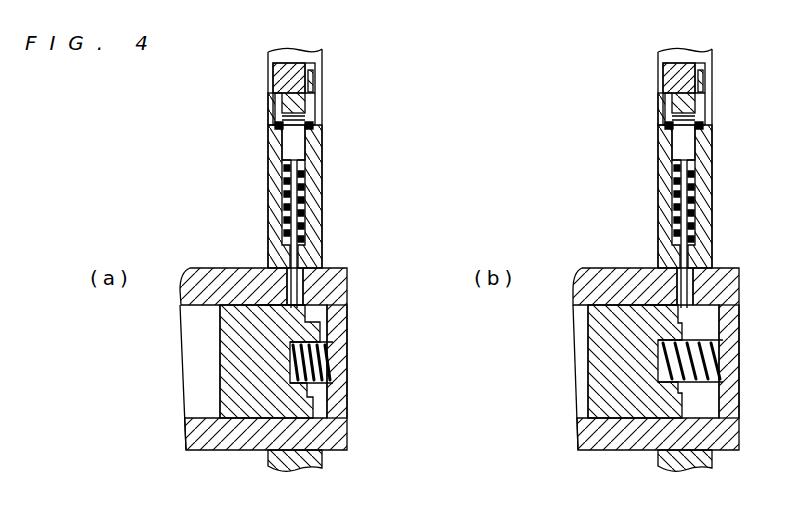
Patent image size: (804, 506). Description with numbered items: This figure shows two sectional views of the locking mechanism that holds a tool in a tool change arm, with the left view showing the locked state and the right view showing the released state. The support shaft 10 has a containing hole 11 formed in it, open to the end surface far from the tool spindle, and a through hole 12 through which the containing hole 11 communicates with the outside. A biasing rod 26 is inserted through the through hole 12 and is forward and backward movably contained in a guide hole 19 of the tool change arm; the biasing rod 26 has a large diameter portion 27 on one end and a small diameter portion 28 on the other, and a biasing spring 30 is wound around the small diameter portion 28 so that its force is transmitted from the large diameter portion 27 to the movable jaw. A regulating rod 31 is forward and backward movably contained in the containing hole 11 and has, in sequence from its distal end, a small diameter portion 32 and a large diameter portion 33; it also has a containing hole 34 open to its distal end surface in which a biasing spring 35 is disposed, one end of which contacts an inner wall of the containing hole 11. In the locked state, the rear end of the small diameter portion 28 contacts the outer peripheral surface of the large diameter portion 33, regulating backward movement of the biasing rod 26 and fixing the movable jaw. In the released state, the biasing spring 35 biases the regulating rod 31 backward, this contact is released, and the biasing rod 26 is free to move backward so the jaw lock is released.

The support shaft 10 is at (264, 450).
The containing hole 11 is at (226, 320).
The through hole 12 is at (300, 262).
The guide hole 19 is at (300, 217).
The biasing rod 26 is at (529, 121).
The large diameter portion 27 is at (300, 142).
The small diameter portion 28 is at (294, 186).
The biasing spring 30 is at (284, 199).
The regulating rod 31 is at (467, 383).
The small diameter portion 32 is at (313, 398).
The large diameter portion 33 is at (241, 416).
The containing hole 34 is at (272, 332).
The biasing spring 35 is at (332, 364).